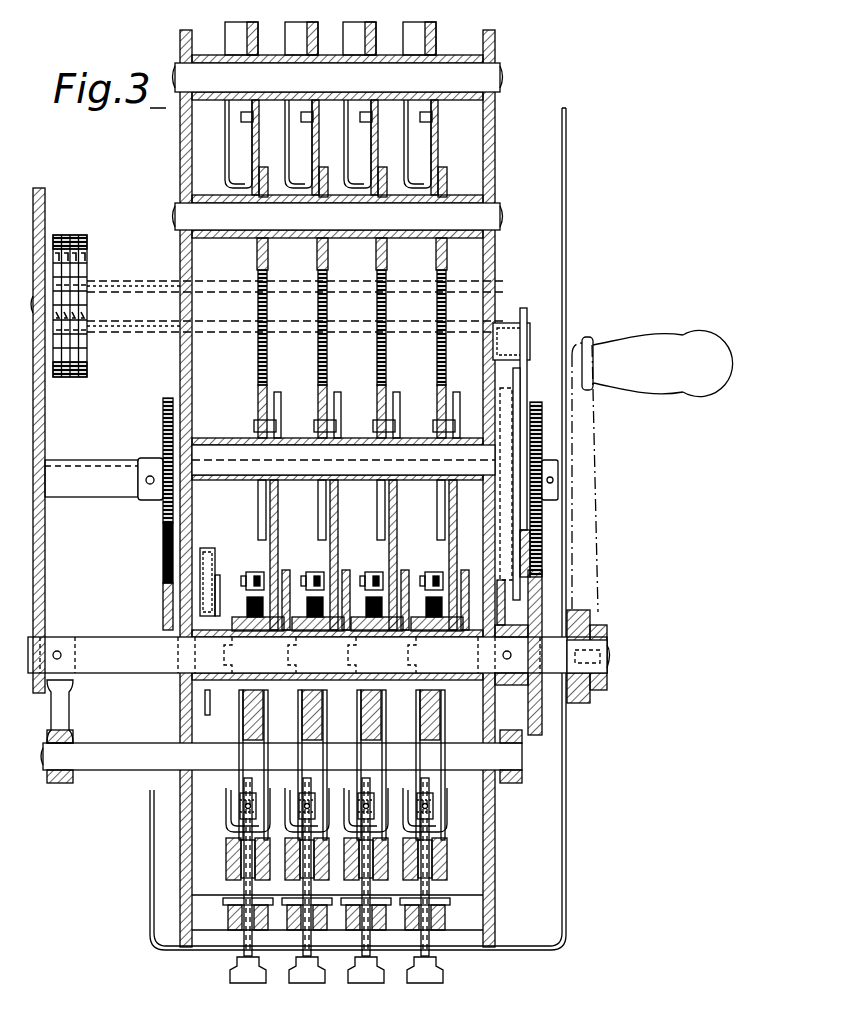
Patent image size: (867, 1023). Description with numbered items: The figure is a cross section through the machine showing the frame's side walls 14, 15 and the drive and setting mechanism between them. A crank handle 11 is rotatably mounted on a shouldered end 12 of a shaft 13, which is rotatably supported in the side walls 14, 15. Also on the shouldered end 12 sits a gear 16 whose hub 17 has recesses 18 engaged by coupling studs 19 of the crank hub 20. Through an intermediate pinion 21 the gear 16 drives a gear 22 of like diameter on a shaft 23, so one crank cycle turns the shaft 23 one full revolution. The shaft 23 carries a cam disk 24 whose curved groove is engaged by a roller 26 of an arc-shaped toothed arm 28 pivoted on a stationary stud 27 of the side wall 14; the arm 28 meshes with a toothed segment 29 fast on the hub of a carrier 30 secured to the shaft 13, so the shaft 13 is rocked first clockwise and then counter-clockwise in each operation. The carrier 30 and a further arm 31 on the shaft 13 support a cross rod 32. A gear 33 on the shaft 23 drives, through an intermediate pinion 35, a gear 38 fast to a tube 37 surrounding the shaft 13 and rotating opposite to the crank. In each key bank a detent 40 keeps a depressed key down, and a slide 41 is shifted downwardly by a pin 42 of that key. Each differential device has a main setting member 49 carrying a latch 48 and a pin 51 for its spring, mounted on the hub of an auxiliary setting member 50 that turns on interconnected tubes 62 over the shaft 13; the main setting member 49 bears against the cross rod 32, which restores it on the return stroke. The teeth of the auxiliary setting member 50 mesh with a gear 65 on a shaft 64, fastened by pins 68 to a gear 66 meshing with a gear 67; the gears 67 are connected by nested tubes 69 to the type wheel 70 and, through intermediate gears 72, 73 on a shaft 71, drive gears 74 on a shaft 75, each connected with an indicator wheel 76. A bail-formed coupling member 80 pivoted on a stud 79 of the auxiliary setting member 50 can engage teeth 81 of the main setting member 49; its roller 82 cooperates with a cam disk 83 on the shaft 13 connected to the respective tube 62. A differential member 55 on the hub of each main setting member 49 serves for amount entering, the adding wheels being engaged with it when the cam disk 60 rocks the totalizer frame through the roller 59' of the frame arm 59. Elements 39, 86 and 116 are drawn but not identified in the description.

The crank handle 11 is at (682, 331).
The shouldered end 12 is at (594, 628).
The shaft 13 is at (133, 673).
The side wall 14 is at (495, 144).
The side wall 15 is at (180, 144).
The gear 16 is at (538, 622).
The hub 17 is at (552, 674).
The recesses 18 is at (524, 660).
The coupling studs 19 is at (547, 660).
The crank hub 20 is at (586, 685).
The intermediate pinion 21 is at (532, 570).
The gear 22 is at (542, 442).
The shaft 23 is at (73, 465).
The cam disk 24 is at (520, 380).
The roller 26 is at (527, 406).
The stationary stud 27 is at (529, 337).
The arc-shaped toothed arm 28 is at (537, 504).
The toothed segment 29 is at (520, 619).
The carrier 30 is at (522, 743).
The arm 31 is at (64, 712).
The cross rod 32 is at (99, 747).
The gear 33 is at (163, 414).
The intermediate pinion 35 is at (163, 564).
The tube 37 is at (200, 648).
The gear 38 is at (163, 599).
The keys 39 is at (409, 990).
The detent 40 is at (410, 878).
The slide 41 is at (434, 864).
The pin 42 is at (446, 905).
The latch 48 is at (430, 835).
The main setting member 49 is at (441, 574).
The auxiliary setting member 50 is at (455, 548).
The pin 51 is at (368, 581).
The differential member 55 is at (439, 819).
The frame arm 59 is at (202, 702).
The roller 59' is at (228, 586).
The cam disk 60 is at (207, 548).
The tubes 62 is at (321, 652).
The shaft 64 is at (220, 456).
The gear 65 is at (455, 395).
The gear 66 is at (434, 374).
The gear 67 is at (433, 351).
The pins 68 is at (436, 422).
The nested tubes 69 is at (108, 281).
The type wheel 70 is at (84, 234).
The shaft 71 is at (490, 219).
The intermediate gear 72 is at (314, 260).
The intermediate gear 73 is at (434, 264).
The gear 74 is at (442, 139).
The shaft 75 is at (493, 78).
The indicator wheel 76 is at (406, 43).
The stud 79 is at (482, 812).
The coupling member 80 is at (480, 830).
The teeth 81 is at (246, 791).
The roller 82 is at (467, 705).
The cam disk 83 is at (465, 571).
The rod 86 is at (241, 781).
The block 116 is at (431, 604).